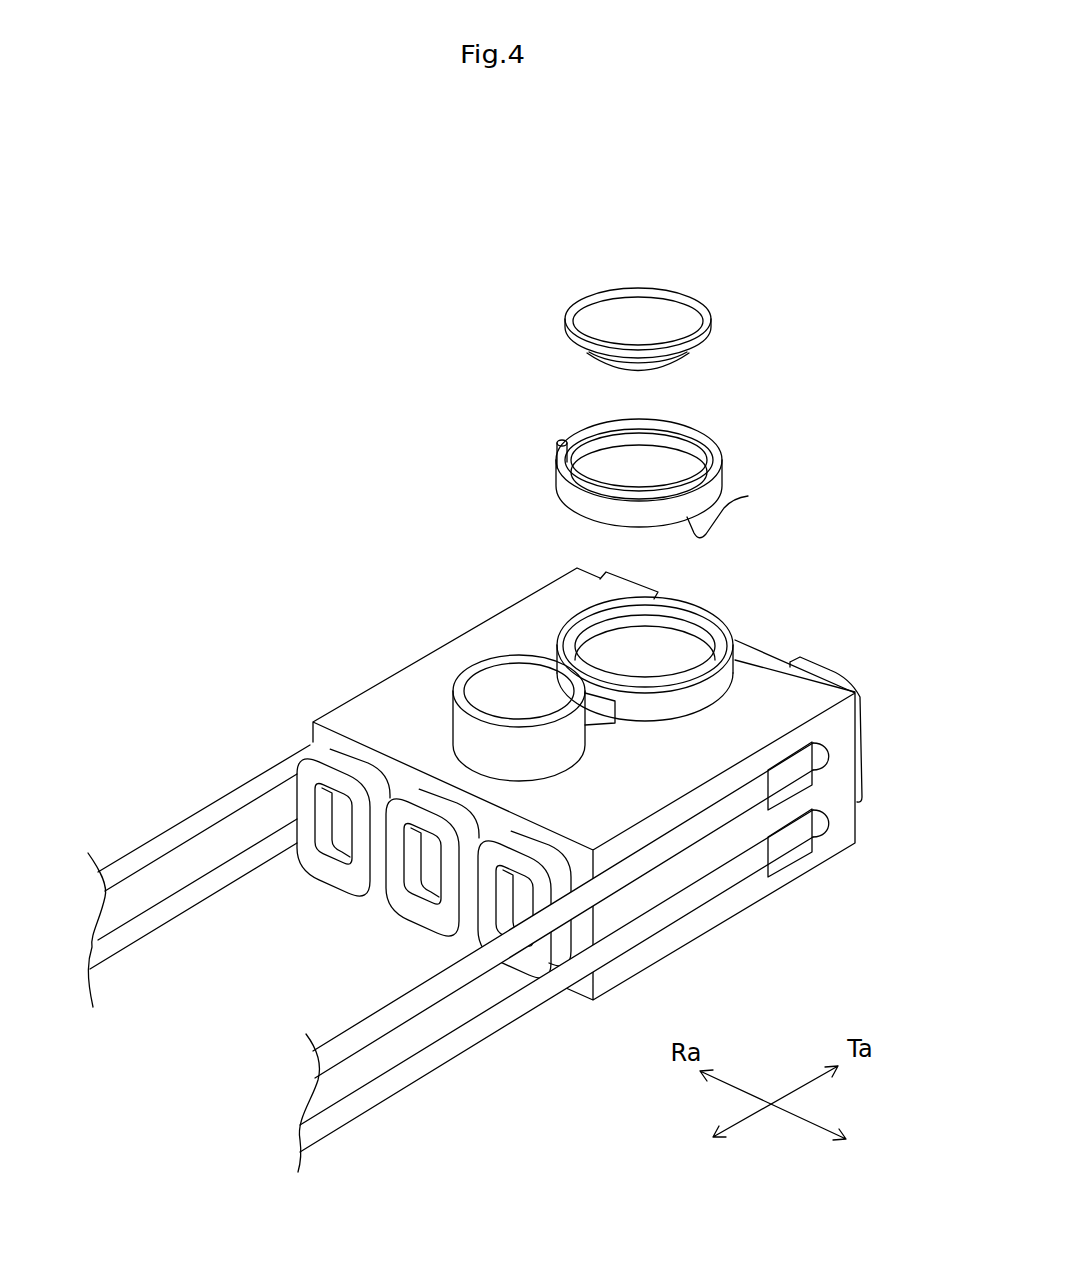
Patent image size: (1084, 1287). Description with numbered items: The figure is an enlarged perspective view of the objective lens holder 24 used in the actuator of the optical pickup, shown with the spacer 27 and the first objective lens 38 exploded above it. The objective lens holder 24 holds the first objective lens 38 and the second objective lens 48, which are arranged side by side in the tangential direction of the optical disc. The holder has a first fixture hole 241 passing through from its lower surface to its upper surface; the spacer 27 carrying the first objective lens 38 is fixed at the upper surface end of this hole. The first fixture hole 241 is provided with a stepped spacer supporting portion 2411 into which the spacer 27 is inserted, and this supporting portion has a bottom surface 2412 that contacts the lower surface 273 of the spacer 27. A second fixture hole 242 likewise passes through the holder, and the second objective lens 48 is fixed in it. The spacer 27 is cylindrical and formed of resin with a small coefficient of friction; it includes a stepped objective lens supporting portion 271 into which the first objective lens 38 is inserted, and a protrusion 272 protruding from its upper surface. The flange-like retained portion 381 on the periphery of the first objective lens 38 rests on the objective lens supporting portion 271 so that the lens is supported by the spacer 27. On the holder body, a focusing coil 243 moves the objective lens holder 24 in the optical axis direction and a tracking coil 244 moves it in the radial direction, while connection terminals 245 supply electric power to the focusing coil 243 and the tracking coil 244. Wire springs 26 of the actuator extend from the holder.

The objective lens holder 24 is at (333, 712).
The first fixture hole 241 is at (585, 642).
The spacer supporting portion 2411 is at (858, 693).
The bottom surface 2412 is at (715, 677).
The second fixture hole 242 is at (490, 670).
The focusing coil 243 is at (745, 635).
The tracking coil 244 is at (612, 575).
The connection terminals 245 is at (812, 850).
The wire springs 26 is at (237, 865).
The spacer 27 is at (707, 430).
The objective lens supporting portion 271 is at (708, 467).
The protrusion 272 is at (559, 441).
The lower surface 273 is at (748, 496).
The first objective lens 38 is at (640, 292).
The retained portion 381 is at (712, 322).
The second objective lens 48 is at (490, 690).